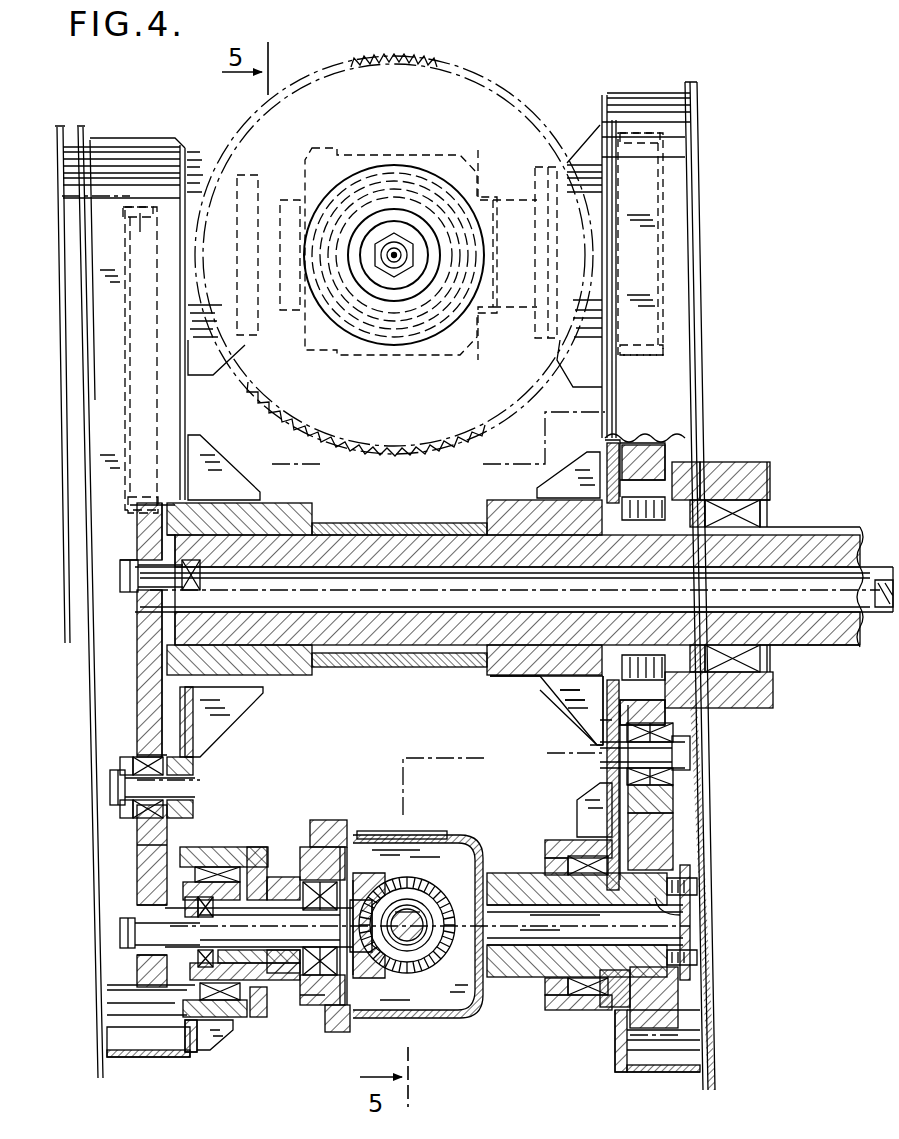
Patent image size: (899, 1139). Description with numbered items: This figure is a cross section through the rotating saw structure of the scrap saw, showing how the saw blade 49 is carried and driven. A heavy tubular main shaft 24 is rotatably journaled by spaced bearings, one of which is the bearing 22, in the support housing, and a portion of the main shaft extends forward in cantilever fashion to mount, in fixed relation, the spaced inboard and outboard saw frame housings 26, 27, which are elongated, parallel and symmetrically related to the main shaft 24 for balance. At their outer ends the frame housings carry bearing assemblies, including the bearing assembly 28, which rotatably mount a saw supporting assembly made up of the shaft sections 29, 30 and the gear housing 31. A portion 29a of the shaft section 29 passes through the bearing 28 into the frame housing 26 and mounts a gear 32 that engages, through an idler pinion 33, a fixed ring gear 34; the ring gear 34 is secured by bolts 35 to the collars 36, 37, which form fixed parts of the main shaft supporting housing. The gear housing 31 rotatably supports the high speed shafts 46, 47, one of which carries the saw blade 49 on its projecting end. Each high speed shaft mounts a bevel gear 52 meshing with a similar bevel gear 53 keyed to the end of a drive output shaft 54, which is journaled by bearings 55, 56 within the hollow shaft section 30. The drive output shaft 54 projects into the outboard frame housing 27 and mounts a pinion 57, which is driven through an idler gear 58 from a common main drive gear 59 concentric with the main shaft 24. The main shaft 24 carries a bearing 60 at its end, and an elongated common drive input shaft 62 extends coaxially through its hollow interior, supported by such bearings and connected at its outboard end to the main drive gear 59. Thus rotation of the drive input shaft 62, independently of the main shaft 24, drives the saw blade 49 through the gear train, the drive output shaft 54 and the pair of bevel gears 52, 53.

The bearing 22 is at (752, 515).
The main shaft 24 is at (815, 630).
The inboard saw frame housing 26 is at (677, 320).
The outboard saw frame housing 27 is at (110, 444).
The bearing assembly 28 is at (588, 180).
The shaft section 29 is at (513, 1003).
The shaft portion 29a is at (667, 913).
The shaft section 30 is at (273, 877).
The gear housing 31 is at (388, 152).
The gear 32 is at (665, 842).
The idler pinion 33 is at (662, 795).
The ring gear 34 is at (600, 724).
The bolt 35 is at (660, 700).
The collar 36 is at (700, 462).
The collar 37 is at (762, 465).
The high speed shaft 46 is at (412, 926).
The high speed shaft 47 is at (394, 266).
The saw blade 49 is at (384, 90).
The bevel gear 52 is at (433, 985).
The bevel gear 53 is at (372, 978).
The drive output shaft 54 is at (275, 935).
The bearing 55 is at (300, 938).
The bearing 56 is at (338, 893).
The pinion 57 is at (190, 178).
The idler gear 58 is at (128, 360).
The main drive gear 59 is at (147, 663).
The bearing 60 is at (200, 573).
The drive input shaft 62 is at (875, 600).